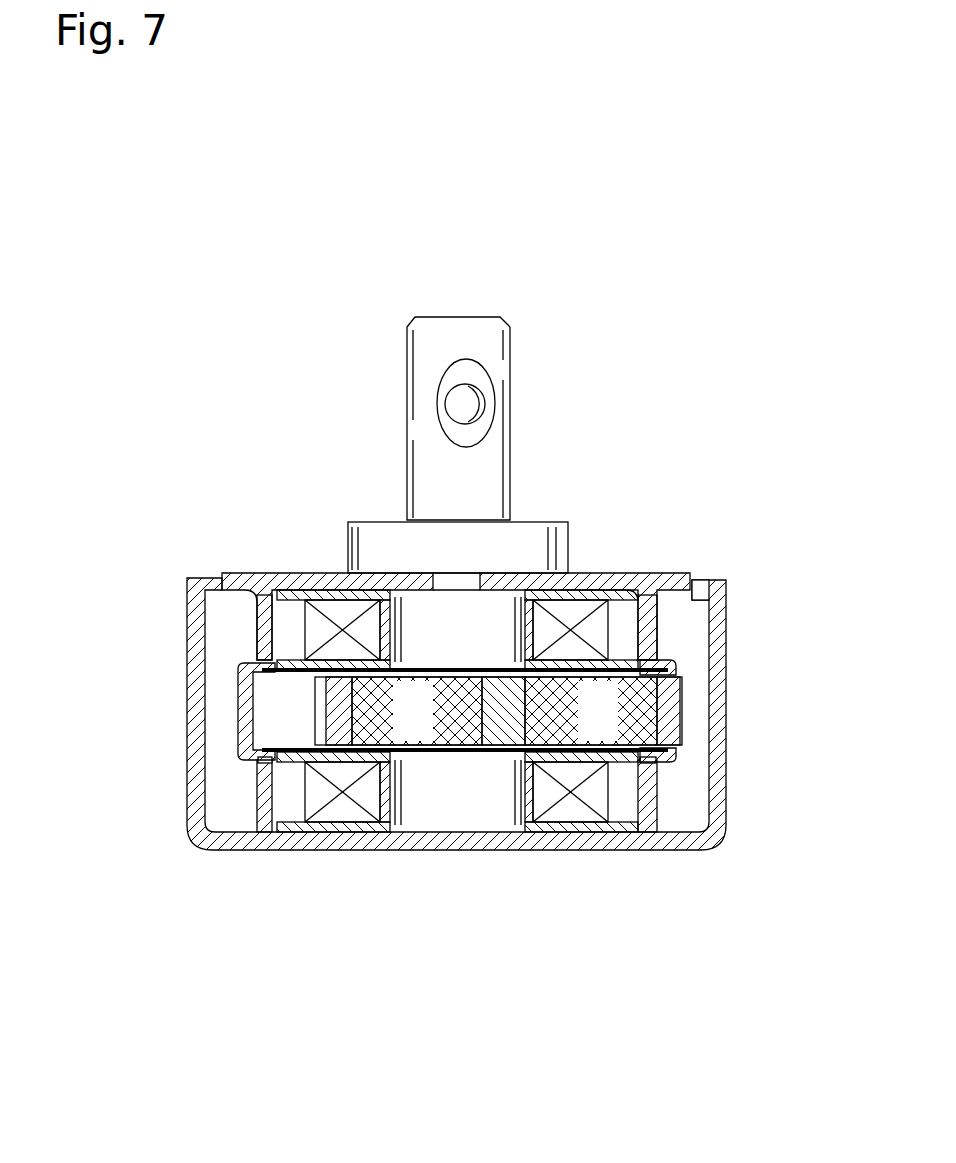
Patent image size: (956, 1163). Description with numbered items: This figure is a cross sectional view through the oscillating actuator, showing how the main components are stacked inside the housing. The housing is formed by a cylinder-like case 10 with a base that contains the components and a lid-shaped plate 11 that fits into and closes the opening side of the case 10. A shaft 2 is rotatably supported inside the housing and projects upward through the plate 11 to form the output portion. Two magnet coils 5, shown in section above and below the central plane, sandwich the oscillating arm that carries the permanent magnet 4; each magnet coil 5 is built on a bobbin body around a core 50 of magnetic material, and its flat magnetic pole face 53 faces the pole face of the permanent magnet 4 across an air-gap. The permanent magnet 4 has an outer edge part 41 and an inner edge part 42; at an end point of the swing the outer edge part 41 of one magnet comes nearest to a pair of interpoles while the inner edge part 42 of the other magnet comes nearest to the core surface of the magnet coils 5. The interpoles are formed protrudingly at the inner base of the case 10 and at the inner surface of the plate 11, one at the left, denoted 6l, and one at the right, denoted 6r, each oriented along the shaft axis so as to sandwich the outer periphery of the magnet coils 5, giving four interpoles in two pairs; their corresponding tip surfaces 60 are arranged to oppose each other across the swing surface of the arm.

The shaft 2 is at (490, 347).
The permanent magnet 4 is at (424, 727).
The magnet coil 5 is at (327, 618).
The left-hand interpoles 6l is at (265, 638).
The right-hand interpoles 6r is at (650, 633).
The case 10 is at (193, 715).
The plate 11 is at (595, 578).
The outer edge part 41 is at (665, 720).
The inner edge part 42 is at (490, 745).
The core 50 is at (407, 617).
The magnetic pole face 53 is at (440, 668).
The tip surfaces 60 is at (255, 680).